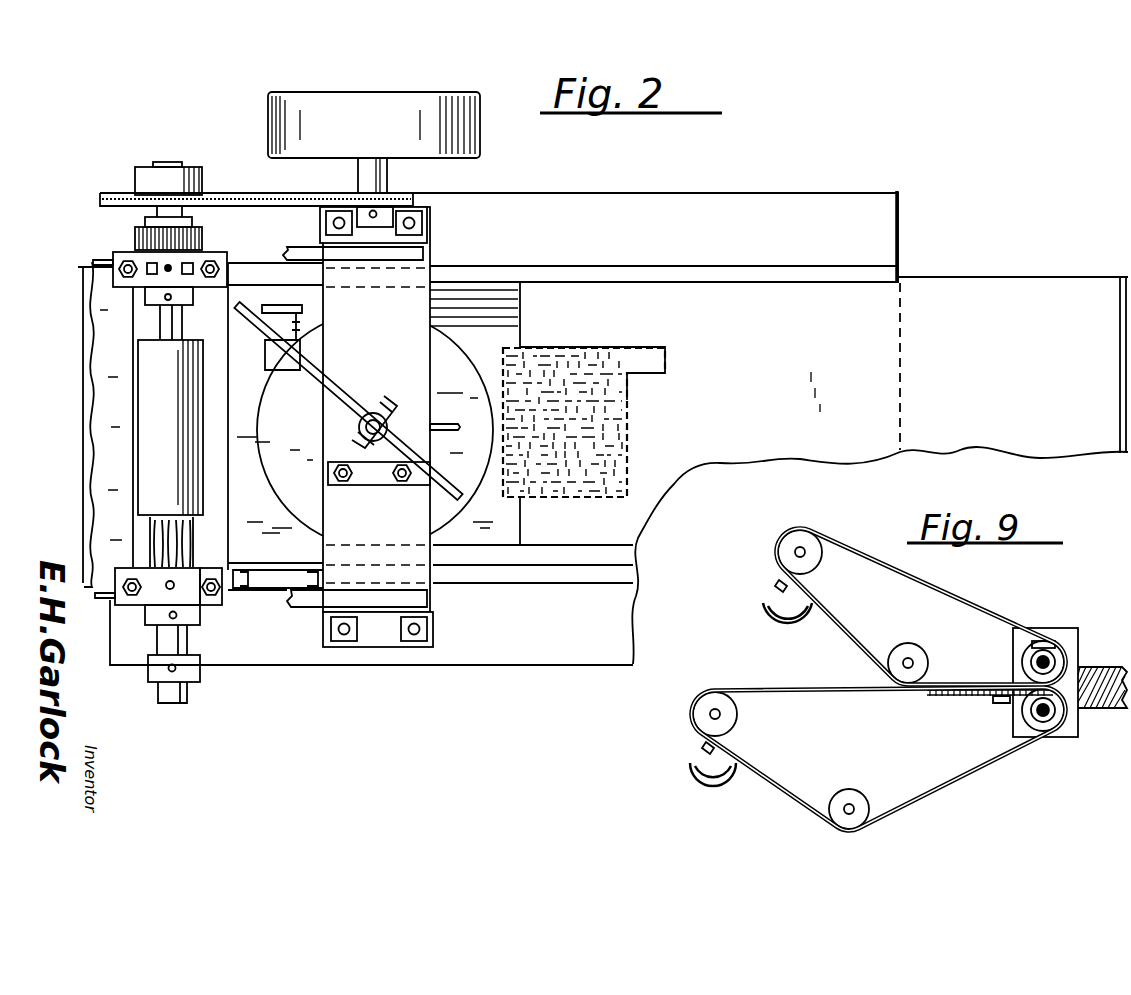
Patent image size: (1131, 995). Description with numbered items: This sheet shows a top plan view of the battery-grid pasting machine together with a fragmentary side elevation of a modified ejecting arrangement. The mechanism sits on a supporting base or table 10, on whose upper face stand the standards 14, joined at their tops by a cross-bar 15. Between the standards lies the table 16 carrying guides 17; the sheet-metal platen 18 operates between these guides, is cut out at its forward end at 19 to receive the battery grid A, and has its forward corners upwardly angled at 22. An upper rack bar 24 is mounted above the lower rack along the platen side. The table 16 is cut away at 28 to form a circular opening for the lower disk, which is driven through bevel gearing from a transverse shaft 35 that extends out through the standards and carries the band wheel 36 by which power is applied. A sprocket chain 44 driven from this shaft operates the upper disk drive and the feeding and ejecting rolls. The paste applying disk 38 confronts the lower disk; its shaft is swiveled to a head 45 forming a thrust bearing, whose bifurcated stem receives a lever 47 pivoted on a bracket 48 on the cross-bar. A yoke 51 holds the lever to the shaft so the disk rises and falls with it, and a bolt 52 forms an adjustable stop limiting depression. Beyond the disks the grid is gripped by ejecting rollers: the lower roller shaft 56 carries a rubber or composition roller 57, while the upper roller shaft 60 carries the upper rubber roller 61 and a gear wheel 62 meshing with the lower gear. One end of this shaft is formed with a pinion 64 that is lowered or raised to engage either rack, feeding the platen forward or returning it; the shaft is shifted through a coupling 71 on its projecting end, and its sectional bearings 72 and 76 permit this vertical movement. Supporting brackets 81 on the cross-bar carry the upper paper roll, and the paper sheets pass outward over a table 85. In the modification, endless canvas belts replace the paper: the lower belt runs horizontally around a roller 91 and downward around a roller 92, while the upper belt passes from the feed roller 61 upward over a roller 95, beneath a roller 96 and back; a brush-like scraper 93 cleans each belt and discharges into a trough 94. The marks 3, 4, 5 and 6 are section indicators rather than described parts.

In FIG. 2, the section line 3- 3 is at (100, 428).
In FIG. 2, the section line 4-4 / article 4 is at (598, 422).
In FIG. 2, the section line 5- 5 is at (310, 88).
In FIG. 2, the section line 6- 6 is at (60, 540).
In FIG. 2, the supporting base or table 10 is at (751, 193).
In FIG. 2, the standards 14 is at (388, 648).
In FIG. 2, the cross-bar 15 is at (410, 315).
In FIG. 2, the table 16 is at (229, 433).
In FIG. 2, the guides 17 is at (588, 262).
In FIG. 2, the platen 18 is at (981, 284).
In FIG. 2, the cut-out of platen 19 is at (597, 347).
In FIG. 2, the upwardly angled corners 22 is at (1120, 319).
In FIG. 2, the upper rack bar 24 is at (590, 539).
In FIG. 2, the cut-away of table 28 is at (465, 348).
In FIG. 2, the transverse shaft 35 is at (387, 175).
In FIG. 2, the band wheel 36 is at (443, 93).
In FIG. 2, the paste applying disk 38 is at (302, 482).
In FIG. 2, the sprocket chain 44 is at (233, 200).
In FIG. 2, the head 45 is at (377, 448).
In FIG. 2, the lever 47 is at (350, 396).
In FIG. 2, the bracket 48 is at (274, 360).
In FIG. 2, the yoke 51 is at (387, 399).
In FIG. 2, the bolt 52 is at (450, 432).
In FIG. 9, the lower roller shaft 56 is at (1080, 730).
In FIG. 9, the rubber or composition roller 57 is at (1036, 714).
In FIG. 2, the upper roller shaft 60 is at (160, 315).
In FIG. 9, the upper roller shaft 60 is at (1060, 660).
In FIG. 2, the upper rubber roller 61 is at (153, 457).
In FIG. 9, the upper rubber roller 61 is at (1030, 661).
In FIG. 2, the gear wheel 62 is at (135, 237).
In FIG. 2, the pinion 64 is at (166, 541).
In FIG. 2, the coupling 71 is at (200, 675).
In FIG. 2, the bearing 72 is at (115, 281).
In FIG. 2, the opposite bearing 76 is at (188, 593).
In FIG. 2, the supporting brackets 81 is at (284, 256).
In FIG. 2, the table 85 is at (92, 378).
In FIG. 9, the table 85 is at (977, 698).
In FIG. 9, the roller 91 is at (722, 714).
In FIG. 9, the roller 92 is at (853, 800).
In FIG. 9, the scraper 93 is at (775, 586).
In FIG. 9, the trough 94 is at (788, 622).
In FIG. 9, the roller 95 is at (805, 548).
In FIG. 9, the roller 96 is at (908, 650).